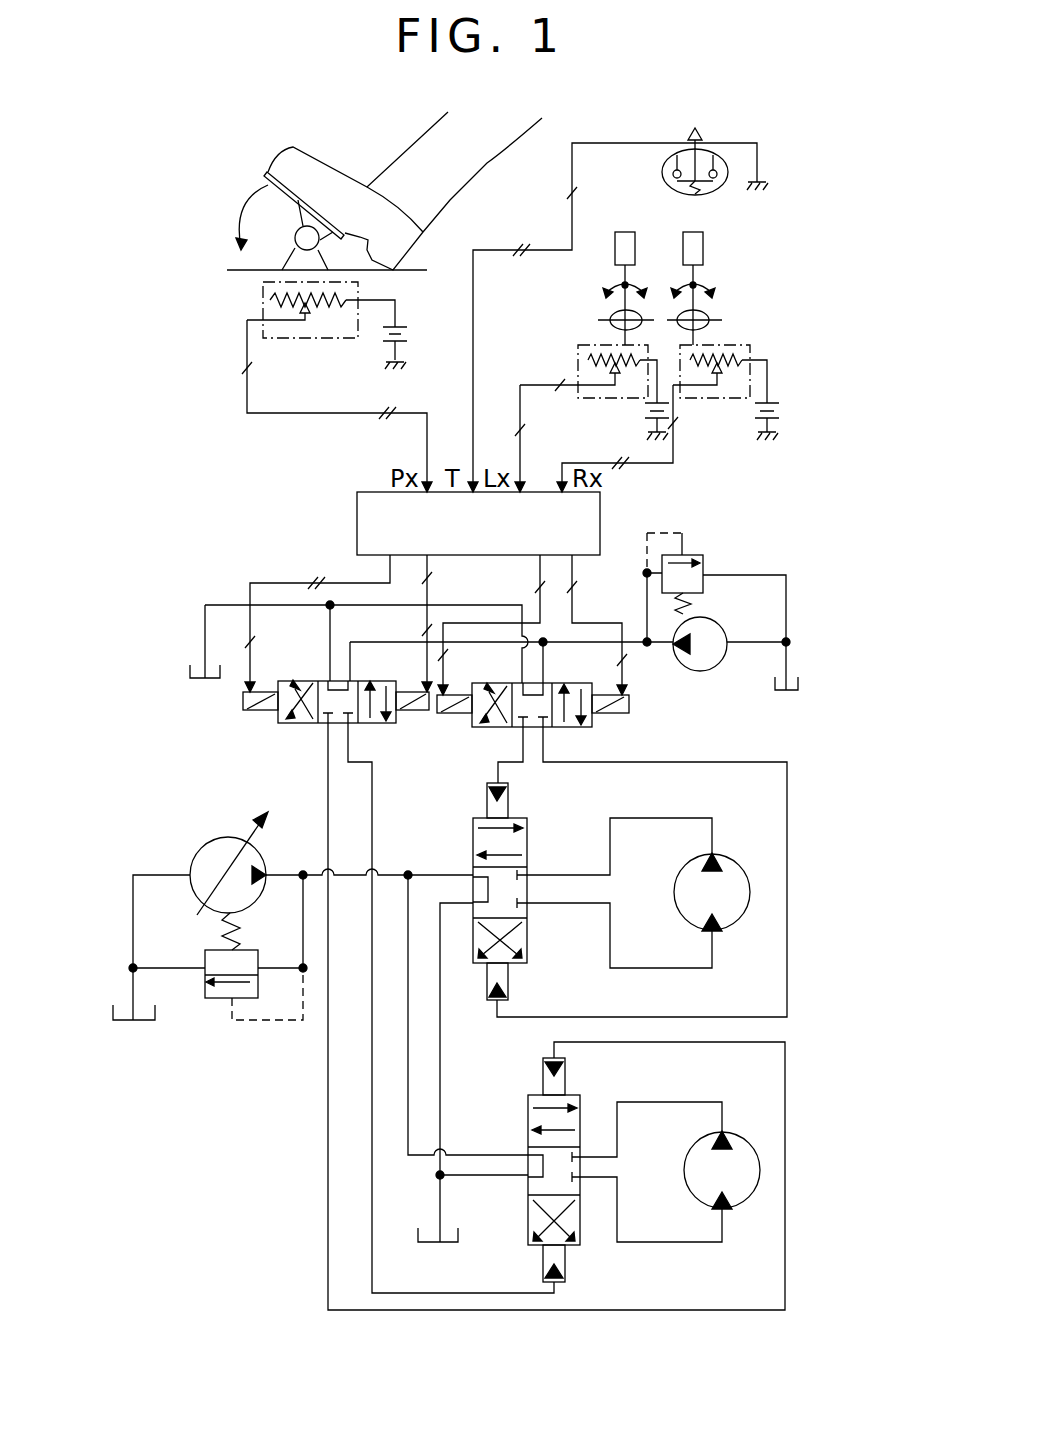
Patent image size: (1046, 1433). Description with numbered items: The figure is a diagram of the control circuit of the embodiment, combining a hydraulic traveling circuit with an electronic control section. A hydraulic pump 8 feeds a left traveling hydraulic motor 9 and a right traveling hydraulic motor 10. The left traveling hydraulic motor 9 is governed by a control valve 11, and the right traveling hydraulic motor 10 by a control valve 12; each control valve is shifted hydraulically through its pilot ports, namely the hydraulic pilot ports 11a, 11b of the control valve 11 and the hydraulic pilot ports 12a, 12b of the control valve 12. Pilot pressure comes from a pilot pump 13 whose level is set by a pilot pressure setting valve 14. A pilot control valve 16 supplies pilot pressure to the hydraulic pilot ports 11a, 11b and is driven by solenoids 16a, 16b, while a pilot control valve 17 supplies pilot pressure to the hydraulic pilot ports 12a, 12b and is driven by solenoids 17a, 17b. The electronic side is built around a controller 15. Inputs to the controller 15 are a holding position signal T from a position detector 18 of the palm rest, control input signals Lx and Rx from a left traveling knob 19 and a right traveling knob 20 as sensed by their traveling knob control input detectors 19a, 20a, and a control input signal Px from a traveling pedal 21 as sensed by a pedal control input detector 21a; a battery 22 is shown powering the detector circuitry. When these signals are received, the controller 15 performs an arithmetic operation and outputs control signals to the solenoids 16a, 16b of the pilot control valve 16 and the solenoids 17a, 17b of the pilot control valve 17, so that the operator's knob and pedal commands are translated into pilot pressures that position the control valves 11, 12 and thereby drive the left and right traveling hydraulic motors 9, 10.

The hydraulic pump 8 is at (208, 842).
The left traveling hydraulic motor 9 is at (736, 864).
The right traveling hydraulic motor 10 is at (733, 1204).
The control valve 11 is at (527, 828).
The hydraulic pilot port 11a is at (508, 790).
The hydraulic pilot port 11b is at (508, 987).
The control valve 12 is at (528, 1126).
The hydraulic pilot port 12a is at (565, 1072).
The hydraulic pilot port 12b is at (565, 1270).
The pilot pump 13 is at (712, 666).
The pilot pressure setting valve 14 is at (690, 555).
The controller 15 is at (600, 510).
The pilot control valve 16 is at (575, 727).
The solenoid 16a is at (629, 707).
The solenoid 16b is at (455, 713).
The pilot control valve 17 is at (300, 723).
The solenoid 17a is at (410, 710).
The solenoid 17b is at (258, 710).
The position detector 18 is at (662, 176).
The left traveling knob 19 is at (612, 240).
The traveling knob control input detector 19a is at (582, 345).
The right traveling knob 20 is at (704, 243).
The traveling knob control input detector 20a is at (750, 345).
The traveling pedal 21 is at (267, 176).
The pedal control input detector 21a is at (268, 296).
The battery 22 is at (410, 342).